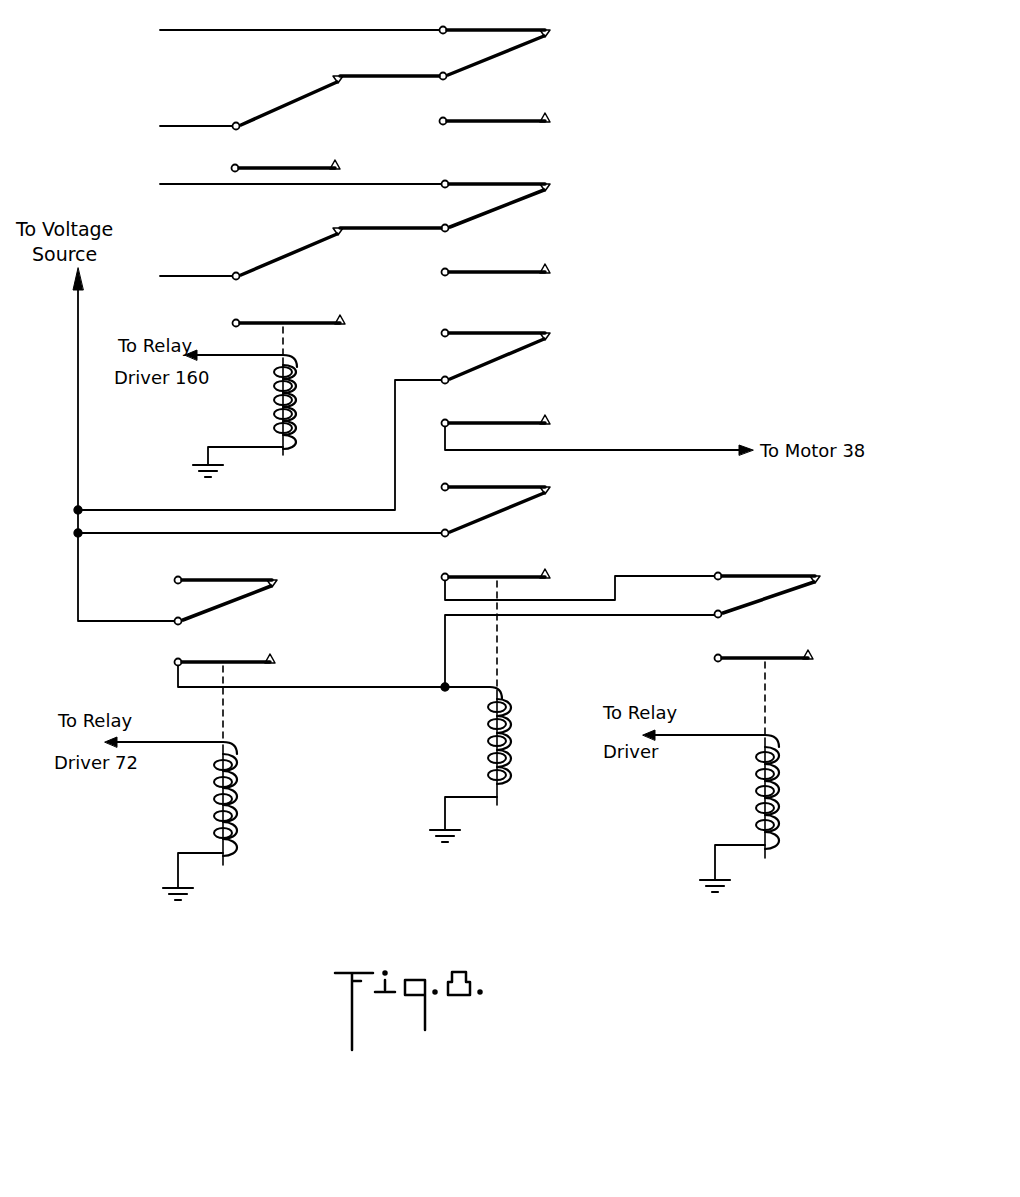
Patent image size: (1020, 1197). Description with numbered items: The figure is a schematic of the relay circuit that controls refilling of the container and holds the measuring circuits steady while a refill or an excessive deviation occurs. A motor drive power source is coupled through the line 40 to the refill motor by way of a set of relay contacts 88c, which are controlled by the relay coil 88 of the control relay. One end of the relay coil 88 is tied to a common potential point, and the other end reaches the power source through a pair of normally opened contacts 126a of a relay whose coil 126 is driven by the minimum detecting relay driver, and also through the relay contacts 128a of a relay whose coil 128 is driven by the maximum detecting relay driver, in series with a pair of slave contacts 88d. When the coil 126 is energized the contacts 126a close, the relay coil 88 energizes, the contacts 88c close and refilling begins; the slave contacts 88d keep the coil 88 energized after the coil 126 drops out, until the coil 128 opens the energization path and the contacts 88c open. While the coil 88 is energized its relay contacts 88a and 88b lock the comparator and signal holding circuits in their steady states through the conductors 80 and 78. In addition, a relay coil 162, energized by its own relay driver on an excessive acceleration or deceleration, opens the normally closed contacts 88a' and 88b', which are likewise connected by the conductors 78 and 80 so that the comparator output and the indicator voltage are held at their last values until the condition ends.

The third output 80 is at (200, 32).
The output 78 is at (205, 186).
The relay contacts 88a is at (535, 90).
The normally closed contacts 88a' is at (319, 136).
The relay contacts 88b is at (534, 243).
The normally closed contacts 88b' is at (321, 291).
The relay contacts 88c is at (556, 399).
The slave contacts 88d is at (549, 563).
The line 40 is at (675, 448).
The relay coil 162 is at (292, 410).
The normally opened contacts 126a is at (278, 636).
The relay coil 126 is at (240, 828).
The relay contacts 128a is at (862, 626).
The relay coil 128 is at (790, 811).
The relay coil 88 is at (510, 793).